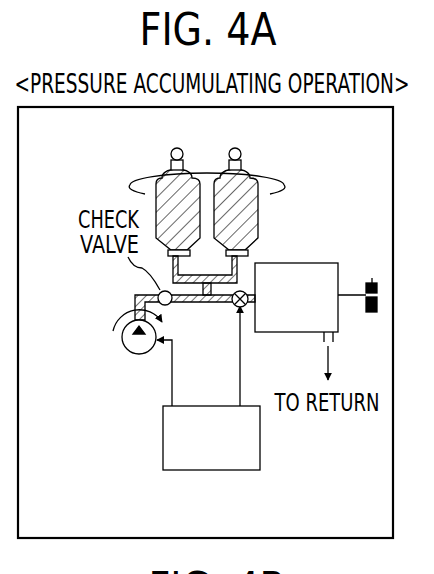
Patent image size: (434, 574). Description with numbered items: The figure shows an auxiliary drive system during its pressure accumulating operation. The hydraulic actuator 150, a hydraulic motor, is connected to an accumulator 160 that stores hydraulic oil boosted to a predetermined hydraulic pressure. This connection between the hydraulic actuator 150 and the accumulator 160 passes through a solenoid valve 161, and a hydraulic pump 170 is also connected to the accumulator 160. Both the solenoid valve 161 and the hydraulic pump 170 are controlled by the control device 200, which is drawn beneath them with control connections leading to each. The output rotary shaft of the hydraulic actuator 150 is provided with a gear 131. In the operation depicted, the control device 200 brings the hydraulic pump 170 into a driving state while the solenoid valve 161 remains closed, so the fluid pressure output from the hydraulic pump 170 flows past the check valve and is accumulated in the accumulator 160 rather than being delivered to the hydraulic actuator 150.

The accumulator 160 is at (262, 162).
The hydraulic actuator 150 is at (307, 263).
The gear 131 is at (372, 280).
The solenoid valve 161 is at (235, 314).
The hydraulic pump 170 is at (139, 354).
The control device 200 is at (235, 470).